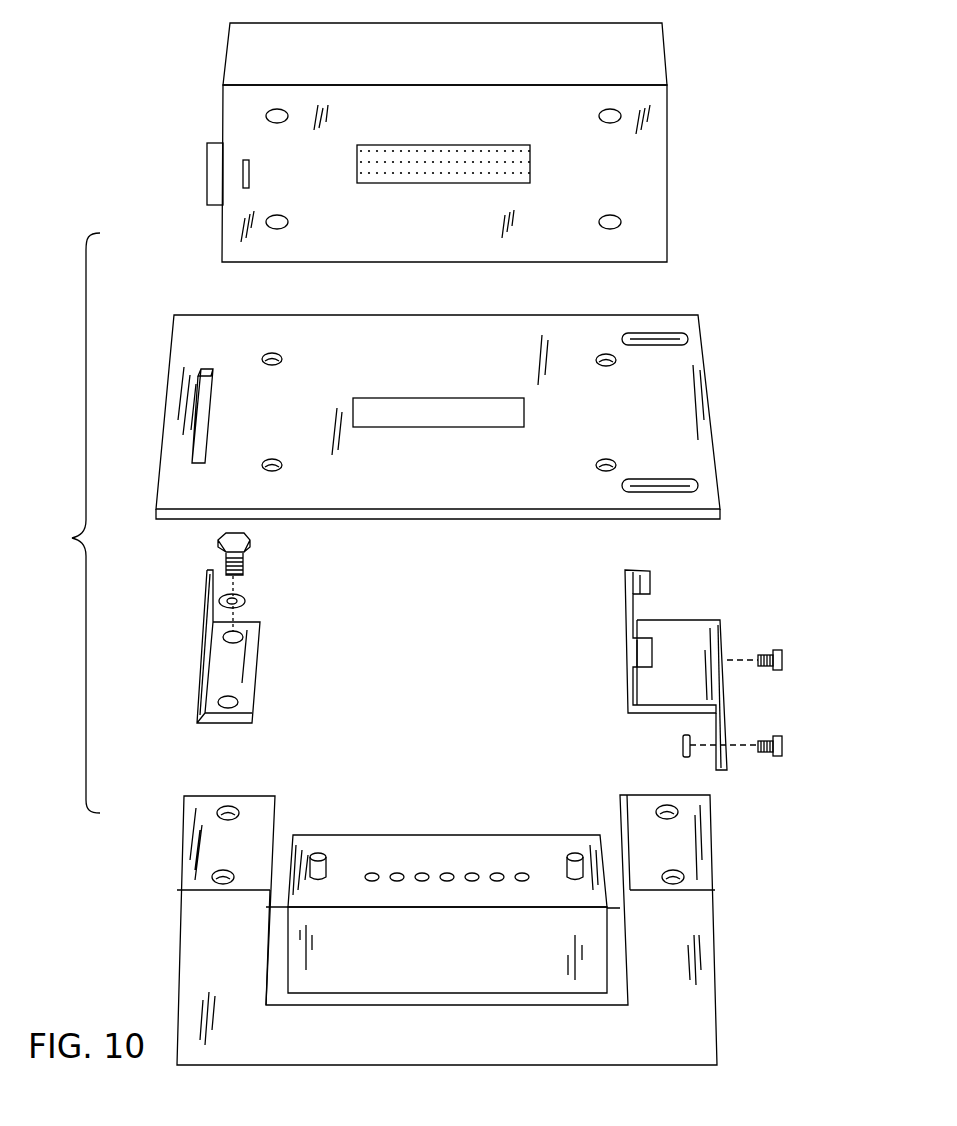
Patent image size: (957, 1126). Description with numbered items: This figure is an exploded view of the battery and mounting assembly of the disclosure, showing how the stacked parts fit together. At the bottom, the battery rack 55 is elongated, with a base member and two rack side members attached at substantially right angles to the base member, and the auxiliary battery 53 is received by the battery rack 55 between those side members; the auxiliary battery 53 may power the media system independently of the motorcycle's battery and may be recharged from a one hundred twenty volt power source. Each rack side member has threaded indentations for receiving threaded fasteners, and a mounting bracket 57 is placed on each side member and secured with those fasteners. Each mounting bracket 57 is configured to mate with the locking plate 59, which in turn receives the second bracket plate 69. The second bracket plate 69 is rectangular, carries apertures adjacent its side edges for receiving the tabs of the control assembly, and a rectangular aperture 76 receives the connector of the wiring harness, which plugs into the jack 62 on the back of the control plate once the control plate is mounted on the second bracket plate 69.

The second bracket plate 69 is at (667, 128).
The jack 62 is at (530, 172).
The locking plate 59 is at (698, 315).
The rectangular aperture 76 is at (524, 415).
The mounting bracket 57 is at (255, 622).
The battery rack 55 is at (715, 890).
The auxiliary battery 53 is at (388, 836).